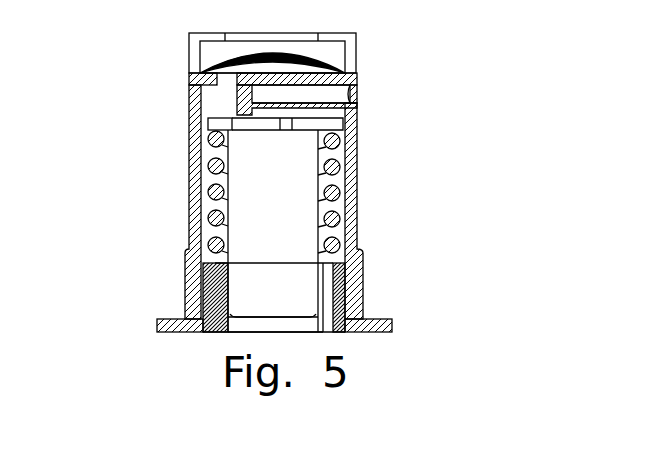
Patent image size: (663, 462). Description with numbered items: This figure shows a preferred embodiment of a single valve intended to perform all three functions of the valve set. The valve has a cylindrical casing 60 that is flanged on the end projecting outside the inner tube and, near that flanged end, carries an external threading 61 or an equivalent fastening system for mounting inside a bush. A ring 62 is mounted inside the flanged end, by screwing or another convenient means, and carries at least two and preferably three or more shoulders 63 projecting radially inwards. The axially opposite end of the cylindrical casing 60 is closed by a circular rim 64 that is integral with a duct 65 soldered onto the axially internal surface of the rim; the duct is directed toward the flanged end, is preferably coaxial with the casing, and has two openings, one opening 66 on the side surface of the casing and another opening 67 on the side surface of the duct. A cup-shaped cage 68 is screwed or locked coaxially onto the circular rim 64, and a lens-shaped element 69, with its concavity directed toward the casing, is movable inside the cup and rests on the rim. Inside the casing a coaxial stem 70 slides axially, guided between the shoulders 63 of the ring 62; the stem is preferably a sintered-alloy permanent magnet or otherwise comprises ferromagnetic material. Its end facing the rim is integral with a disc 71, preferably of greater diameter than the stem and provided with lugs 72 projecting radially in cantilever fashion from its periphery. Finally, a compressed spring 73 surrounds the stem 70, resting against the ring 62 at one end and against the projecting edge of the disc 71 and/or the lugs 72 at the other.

The cylindrical casing 60 is at (352, 235).
The external threading 61 is at (365, 292).
The ring 62 is at (365, 311).
The shoulders 63 is at (325, 272).
The circular rim 64 is at (355, 70).
The duct 65 is at (355, 113).
The opening 66 is at (338, 95).
The opening 67 is at (272, 108).
The cup-shaped cage 68 is at (194, 48).
The lens-shaped element 69 is at (255, 57).
The stem 70 is at (272, 200).
The disc 71 is at (302, 123).
The lugs 72 is at (225, 124).
The compressed spring 73 is at (205, 219).